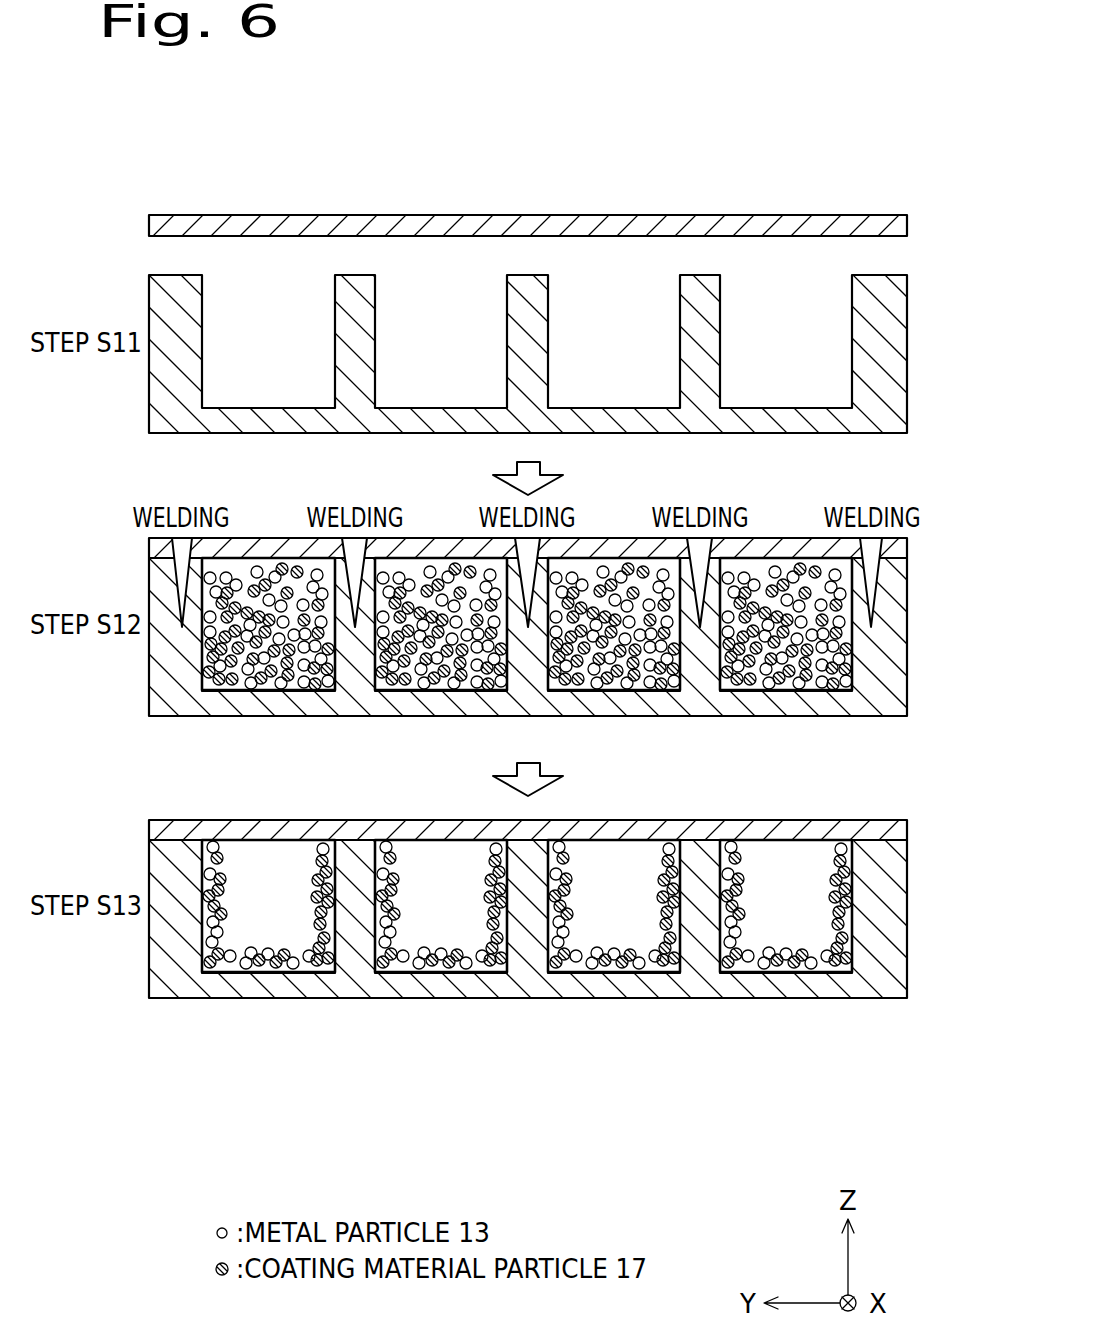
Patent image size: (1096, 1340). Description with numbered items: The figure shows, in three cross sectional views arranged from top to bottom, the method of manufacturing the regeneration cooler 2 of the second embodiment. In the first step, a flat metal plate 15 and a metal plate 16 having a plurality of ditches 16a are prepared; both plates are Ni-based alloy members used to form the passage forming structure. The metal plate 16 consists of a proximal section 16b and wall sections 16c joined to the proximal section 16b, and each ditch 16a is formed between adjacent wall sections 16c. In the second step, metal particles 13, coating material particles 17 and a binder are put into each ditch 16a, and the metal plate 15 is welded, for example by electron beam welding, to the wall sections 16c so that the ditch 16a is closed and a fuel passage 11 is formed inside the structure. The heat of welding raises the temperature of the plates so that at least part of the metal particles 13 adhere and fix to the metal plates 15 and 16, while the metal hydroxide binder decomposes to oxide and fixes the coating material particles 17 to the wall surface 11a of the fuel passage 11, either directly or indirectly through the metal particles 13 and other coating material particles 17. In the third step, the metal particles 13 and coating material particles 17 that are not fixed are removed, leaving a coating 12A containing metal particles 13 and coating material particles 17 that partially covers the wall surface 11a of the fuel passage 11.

The regeneration cooler 2 is at (914, 846).
The fuel passage 11 is at (253, 643).
The wall surface 11a is at (272, 838).
The coating 12A is at (257, 1030).
The metal particle 13 is at (216, 688).
The metal plate 15 is at (826, 227).
The metal plate 16 is at (882, 425).
The ditch 16a is at (274, 306).
The proximal section 16b is at (784, 424).
The wall section 16c is at (363, 315).
The coating material particle 17 is at (267, 571).